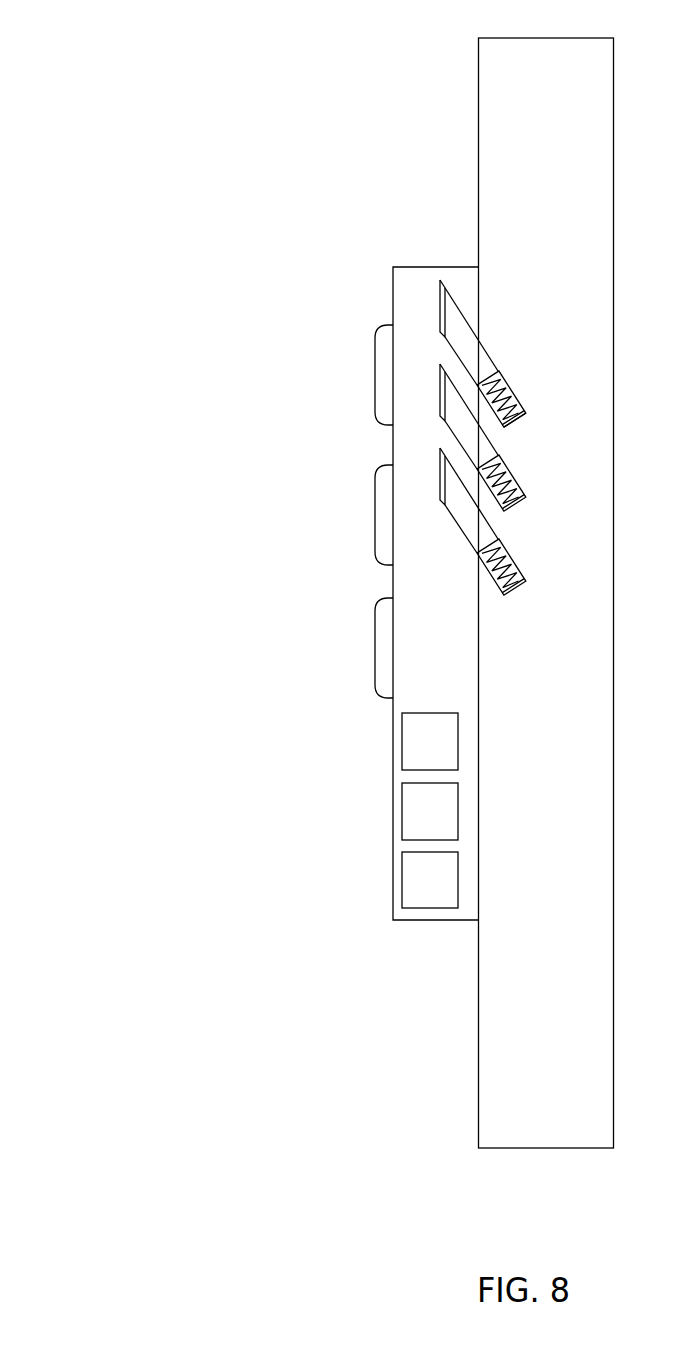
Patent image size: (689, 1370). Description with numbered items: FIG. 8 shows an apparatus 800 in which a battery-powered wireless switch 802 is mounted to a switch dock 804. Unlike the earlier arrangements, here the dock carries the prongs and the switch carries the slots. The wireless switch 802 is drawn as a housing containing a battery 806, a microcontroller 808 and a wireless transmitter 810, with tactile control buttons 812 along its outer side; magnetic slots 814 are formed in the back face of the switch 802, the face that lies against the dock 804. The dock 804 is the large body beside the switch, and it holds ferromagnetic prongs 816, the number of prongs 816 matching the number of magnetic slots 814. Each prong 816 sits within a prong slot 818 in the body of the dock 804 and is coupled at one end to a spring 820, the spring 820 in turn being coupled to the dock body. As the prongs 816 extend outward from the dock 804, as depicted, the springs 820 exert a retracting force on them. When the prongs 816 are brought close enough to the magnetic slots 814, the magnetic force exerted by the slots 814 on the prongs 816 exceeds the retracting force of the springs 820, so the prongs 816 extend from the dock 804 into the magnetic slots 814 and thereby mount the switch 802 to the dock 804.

The apparatus 800 is at (162, 95).
The battery-powered wireless switch 802 is at (465, 634).
The switch dock 804 is at (578, 935).
The battery 806 is at (456, 756).
The microcontroller 808 is at (456, 826).
The wireless transmitter 810 is at (456, 894).
The tactile control buttons 812 is at (376, 509).
The magnetic slots 814 is at (454, 431).
The ferromagnetic prongs 816 is at (480, 353).
The prong slots 818 is at (511, 388).
The springs 820 is at (523, 407).